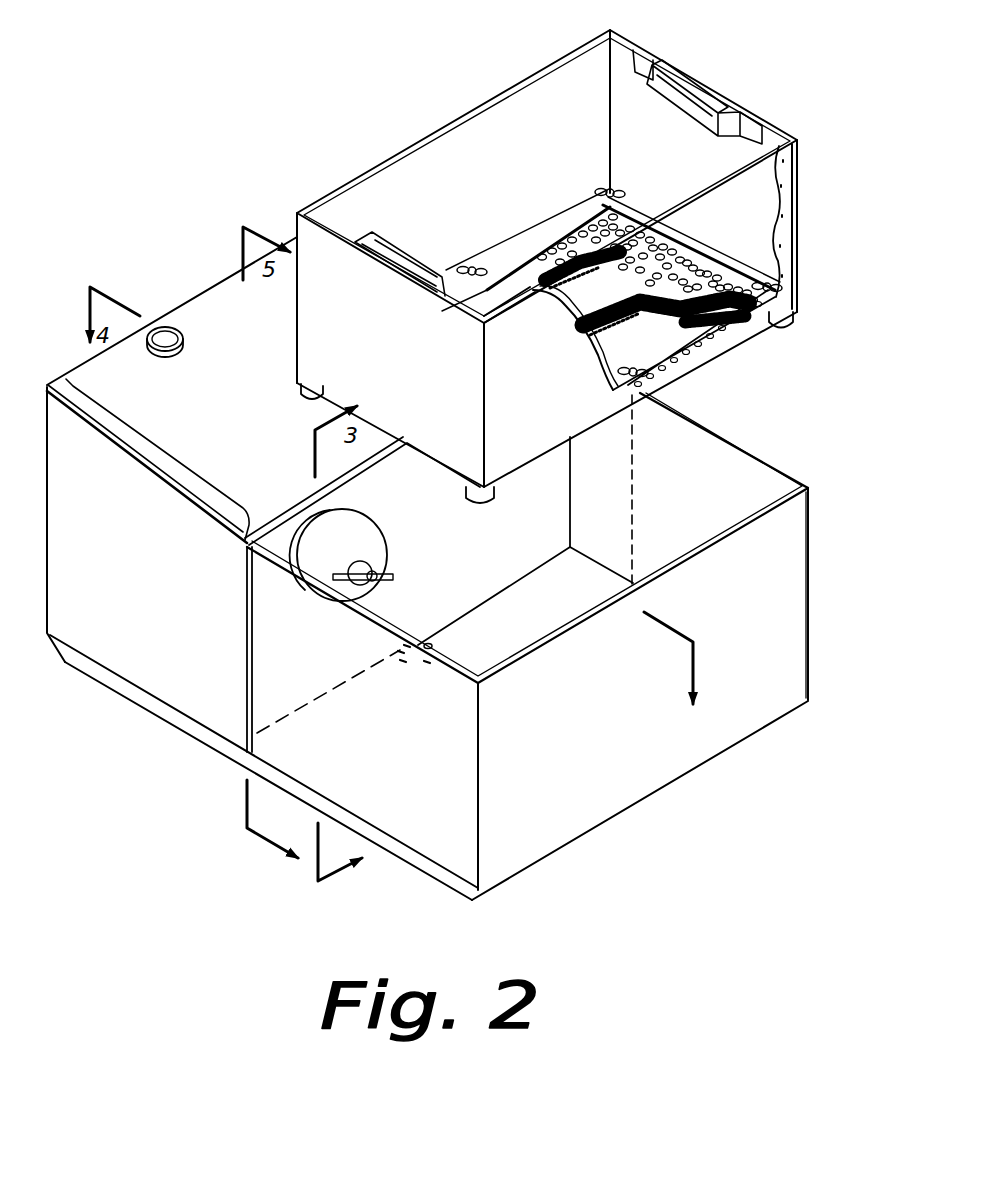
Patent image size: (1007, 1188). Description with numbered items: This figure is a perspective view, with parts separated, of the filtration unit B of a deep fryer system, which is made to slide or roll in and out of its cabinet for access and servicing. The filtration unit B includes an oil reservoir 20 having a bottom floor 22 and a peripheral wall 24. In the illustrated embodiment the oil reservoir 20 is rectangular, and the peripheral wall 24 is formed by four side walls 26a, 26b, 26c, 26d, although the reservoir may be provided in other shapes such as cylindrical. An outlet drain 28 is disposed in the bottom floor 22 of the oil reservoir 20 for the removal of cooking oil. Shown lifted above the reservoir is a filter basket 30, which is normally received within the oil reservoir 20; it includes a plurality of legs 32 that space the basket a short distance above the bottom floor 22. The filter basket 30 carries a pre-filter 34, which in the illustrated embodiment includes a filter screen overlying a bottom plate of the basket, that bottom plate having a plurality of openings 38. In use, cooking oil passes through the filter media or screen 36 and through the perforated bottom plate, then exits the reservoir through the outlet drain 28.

The oil reservoir 20 is at (688, 476).
The bottom floor 22 is at (537, 628).
The peripheral wall 24 is at (782, 471).
The side wall 26a is at (809, 542).
The side wall 26b is at (663, 765).
The side wall 26c is at (446, 844).
The side wall 26d is at (483, 548).
The outlet drain 28 is at (428, 645).
The filter basket 30 is at (480, 104).
The legs 32 is at (798, 320).
The pre-filter 34 is at (570, 212).
The filter media or screen 36 is at (745, 236).
The openings 38 is at (668, 237).
The filtration unit B is at (202, 788).